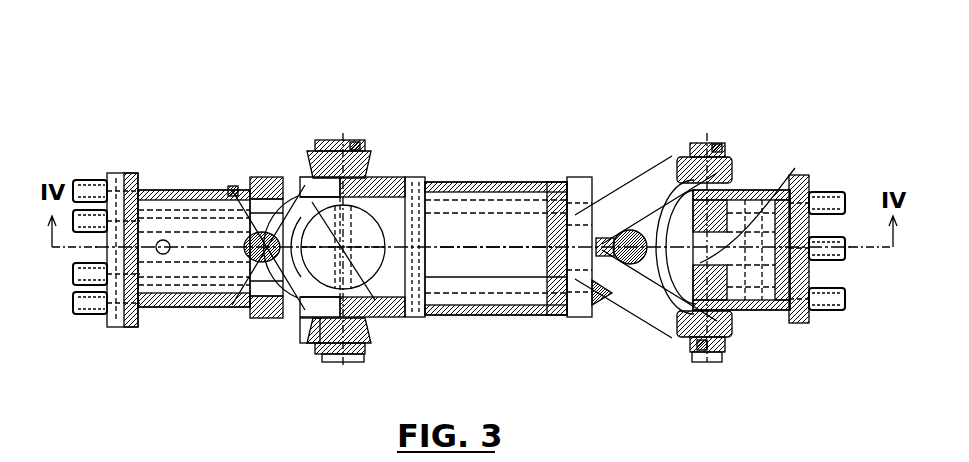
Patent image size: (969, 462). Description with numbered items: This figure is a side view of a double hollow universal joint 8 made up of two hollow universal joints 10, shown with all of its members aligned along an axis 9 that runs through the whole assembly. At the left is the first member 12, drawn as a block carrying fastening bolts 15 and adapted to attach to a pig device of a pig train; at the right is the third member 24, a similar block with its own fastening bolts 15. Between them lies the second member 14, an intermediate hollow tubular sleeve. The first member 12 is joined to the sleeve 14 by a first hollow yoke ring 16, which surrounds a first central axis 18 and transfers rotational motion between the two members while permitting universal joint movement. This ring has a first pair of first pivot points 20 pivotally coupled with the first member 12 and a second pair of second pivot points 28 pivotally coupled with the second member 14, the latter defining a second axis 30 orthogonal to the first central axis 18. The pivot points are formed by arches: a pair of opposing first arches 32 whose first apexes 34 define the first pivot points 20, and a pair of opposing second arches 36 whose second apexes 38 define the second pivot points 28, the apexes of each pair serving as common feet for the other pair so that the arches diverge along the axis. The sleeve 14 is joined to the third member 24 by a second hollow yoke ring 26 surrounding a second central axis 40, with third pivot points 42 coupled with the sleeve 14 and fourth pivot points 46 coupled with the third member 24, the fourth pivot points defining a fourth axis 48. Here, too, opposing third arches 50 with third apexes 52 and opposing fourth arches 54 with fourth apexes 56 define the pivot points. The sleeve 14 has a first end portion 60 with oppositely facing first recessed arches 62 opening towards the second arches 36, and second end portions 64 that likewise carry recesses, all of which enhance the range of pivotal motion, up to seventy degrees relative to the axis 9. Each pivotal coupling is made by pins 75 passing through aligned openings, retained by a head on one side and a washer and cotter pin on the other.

The double hollow universal joint 8 is at (492, 148).
The axis 9 is at (474, 250).
The hollow universal joint 10 is at (380, 128).
The first member 12 is at (170, 190).
The second member 14 is at (513, 182).
The fastening bolts 15 is at (837, 314).
The first hollow yoke ring 16 is at (300, 178).
The first central axis 18 is at (415, 185).
The first pivot points 20 is at (235, 300).
The third member 24 is at (762, 192).
The second hollow yoke ring 26 is at (668, 338).
The second pivot points 28 is at (333, 140).
The second axis 30 is at (352, 385).
The first arches 32 is at (268, 178).
The first apexes 34 is at (205, 306).
The second arches 36 is at (396, 200).
The second apexes 38 is at (380, 170).
The second central axis 40 is at (693, 158).
The third pivot points 42 is at (625, 310).
The fourth pivot points 46 is at (730, 160).
The fourth axis 48 is at (710, 364).
The third arches 50 is at (640, 210).
The third apexes 52 is at (598, 303).
The fourth arches 54 is at (812, 180).
The fourth apexes 56 is at (800, 188).
The first end portion 60 is at (312, 345).
The first recessed arches 62 is at (272, 268).
The second end portions 64 is at (605, 188).
The pins 75 is at (232, 188).